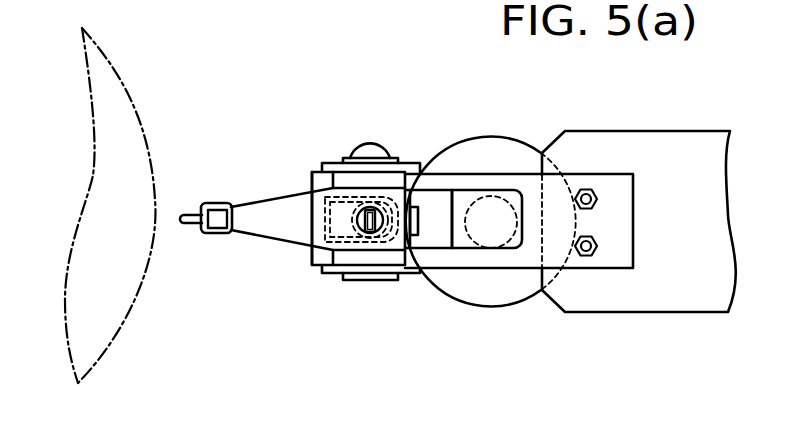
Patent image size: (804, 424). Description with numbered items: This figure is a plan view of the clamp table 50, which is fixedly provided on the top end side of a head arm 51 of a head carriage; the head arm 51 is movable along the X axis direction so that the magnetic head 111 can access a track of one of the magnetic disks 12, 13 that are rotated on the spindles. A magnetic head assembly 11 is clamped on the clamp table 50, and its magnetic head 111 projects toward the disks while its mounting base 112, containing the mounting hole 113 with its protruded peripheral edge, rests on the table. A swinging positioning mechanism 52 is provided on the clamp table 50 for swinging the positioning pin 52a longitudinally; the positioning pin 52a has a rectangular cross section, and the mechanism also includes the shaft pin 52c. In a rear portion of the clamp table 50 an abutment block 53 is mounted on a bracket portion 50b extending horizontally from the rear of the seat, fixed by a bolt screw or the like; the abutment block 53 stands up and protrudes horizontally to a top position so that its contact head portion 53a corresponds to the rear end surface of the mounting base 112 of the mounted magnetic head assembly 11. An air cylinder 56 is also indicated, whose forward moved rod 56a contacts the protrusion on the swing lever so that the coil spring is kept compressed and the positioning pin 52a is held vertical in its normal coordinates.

The magnetic head assembly 11 is at (256, 191).
The magnetic disk 12 is at (135, 204).
The magnetic disk 13 is at (133, 98).
The clamp table 50 is at (602, 150).
The bracket portion 50b is at (627, 220).
The head arm 51 is at (693, 143).
The swinging positioning mechanism 52 is at (340, 220).
The positioning pin 52a is at (359, 214).
The shaft pin 52c is at (372, 152).
The abutment block 53 is at (463, 213).
The contact head portion 53a is at (418, 190).
The air cylinder 56 is at (491, 232).
The rod 56a is at (490, 198).
The magnetic head 111 is at (218, 223).
The mounting base 112 is at (340, 238).
The mounting hole 113 is at (382, 224).